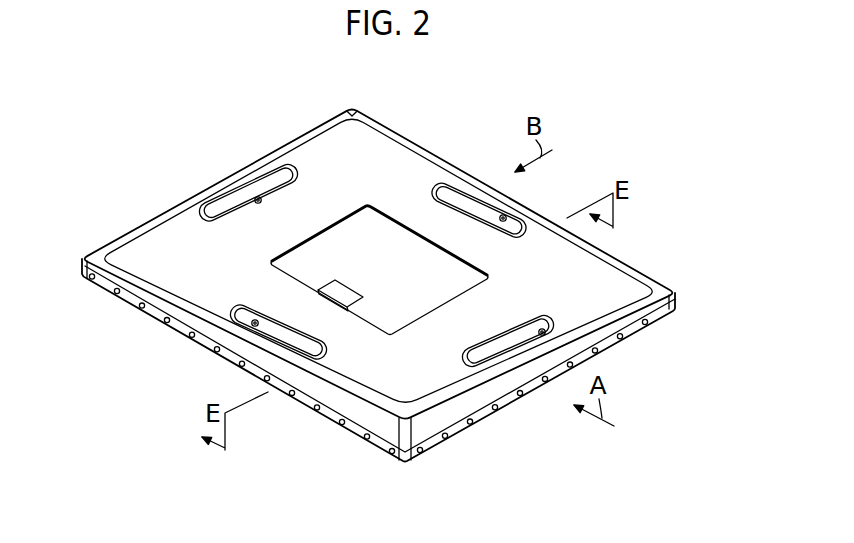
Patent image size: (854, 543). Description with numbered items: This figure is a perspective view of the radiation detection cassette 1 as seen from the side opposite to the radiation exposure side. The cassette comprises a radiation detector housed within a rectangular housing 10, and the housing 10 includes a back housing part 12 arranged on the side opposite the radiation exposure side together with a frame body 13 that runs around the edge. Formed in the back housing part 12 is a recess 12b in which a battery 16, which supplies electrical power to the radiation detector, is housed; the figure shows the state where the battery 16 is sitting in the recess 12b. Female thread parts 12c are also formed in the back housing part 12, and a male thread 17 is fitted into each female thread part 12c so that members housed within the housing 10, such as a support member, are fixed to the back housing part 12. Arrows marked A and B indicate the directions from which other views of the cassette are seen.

The radiation detection cassette 1 is at (186, 73).
The housing 10 is at (611, 250).
The back housing part 12 is at (386, 379).
The recess 12b is at (376, 299).
The female thread parts 12c is at (252, 193).
The frame body 13 is at (383, 444).
The battery 16 is at (371, 224).
The male thread 17 is at (259, 196).